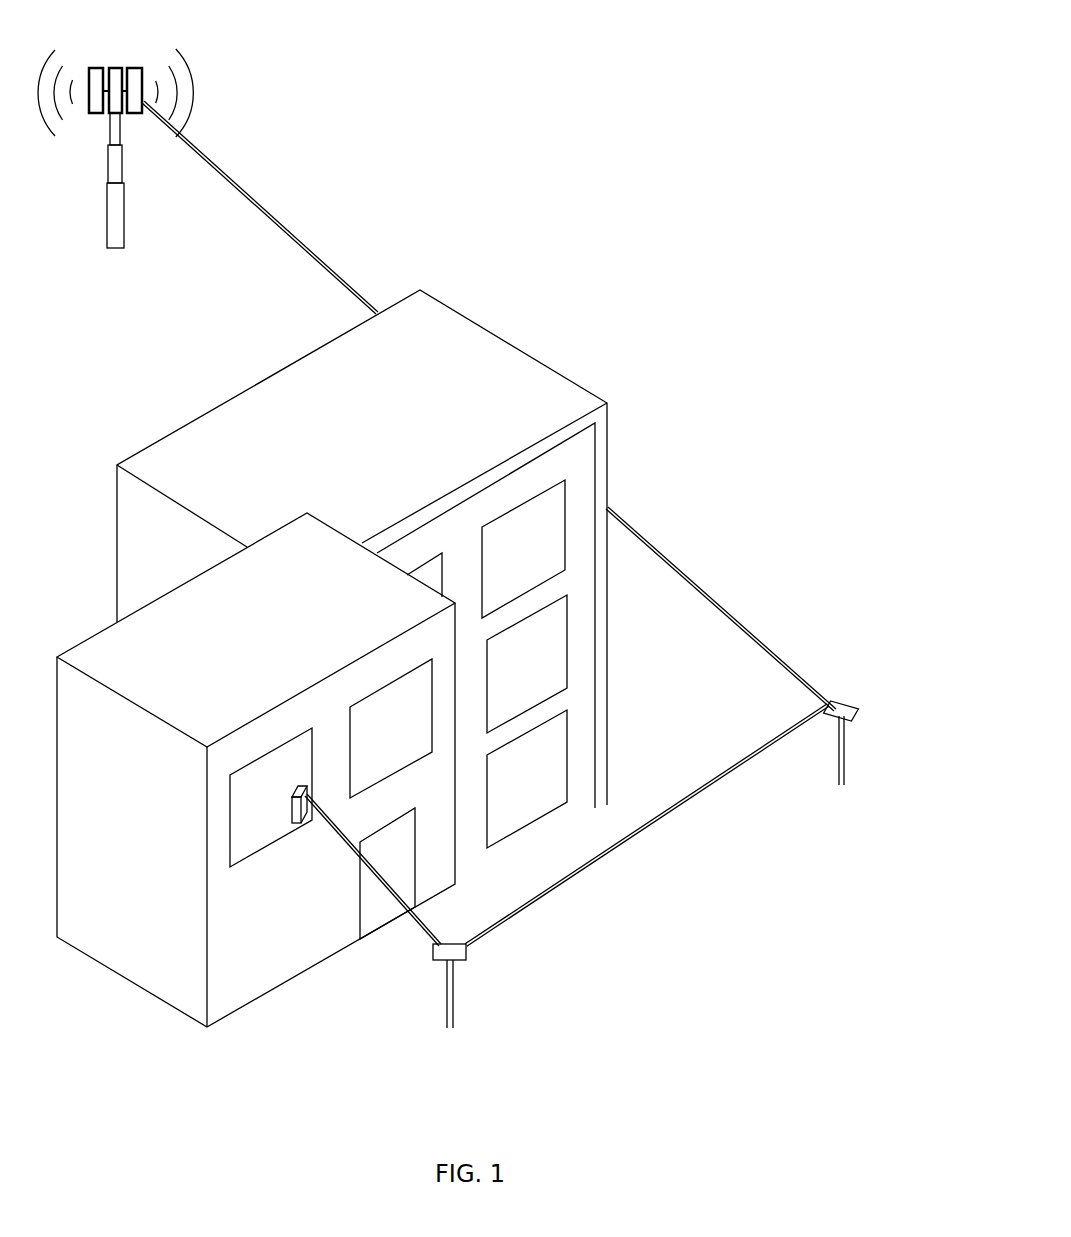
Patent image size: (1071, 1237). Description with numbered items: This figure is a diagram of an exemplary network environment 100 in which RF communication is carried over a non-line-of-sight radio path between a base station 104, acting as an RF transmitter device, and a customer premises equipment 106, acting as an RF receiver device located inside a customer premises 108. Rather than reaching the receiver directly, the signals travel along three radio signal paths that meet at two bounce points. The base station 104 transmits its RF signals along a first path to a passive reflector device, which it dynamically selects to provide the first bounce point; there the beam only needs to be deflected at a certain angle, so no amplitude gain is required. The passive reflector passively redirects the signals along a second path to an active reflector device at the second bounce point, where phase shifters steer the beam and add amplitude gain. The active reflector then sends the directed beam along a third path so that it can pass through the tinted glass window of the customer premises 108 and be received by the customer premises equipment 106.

The communication system 100 is at (752, 66).
The base station 104 is at (105, 215).
The customer premises equipment 106 is at (293, 797).
The customer premises 108 is at (150, 447).